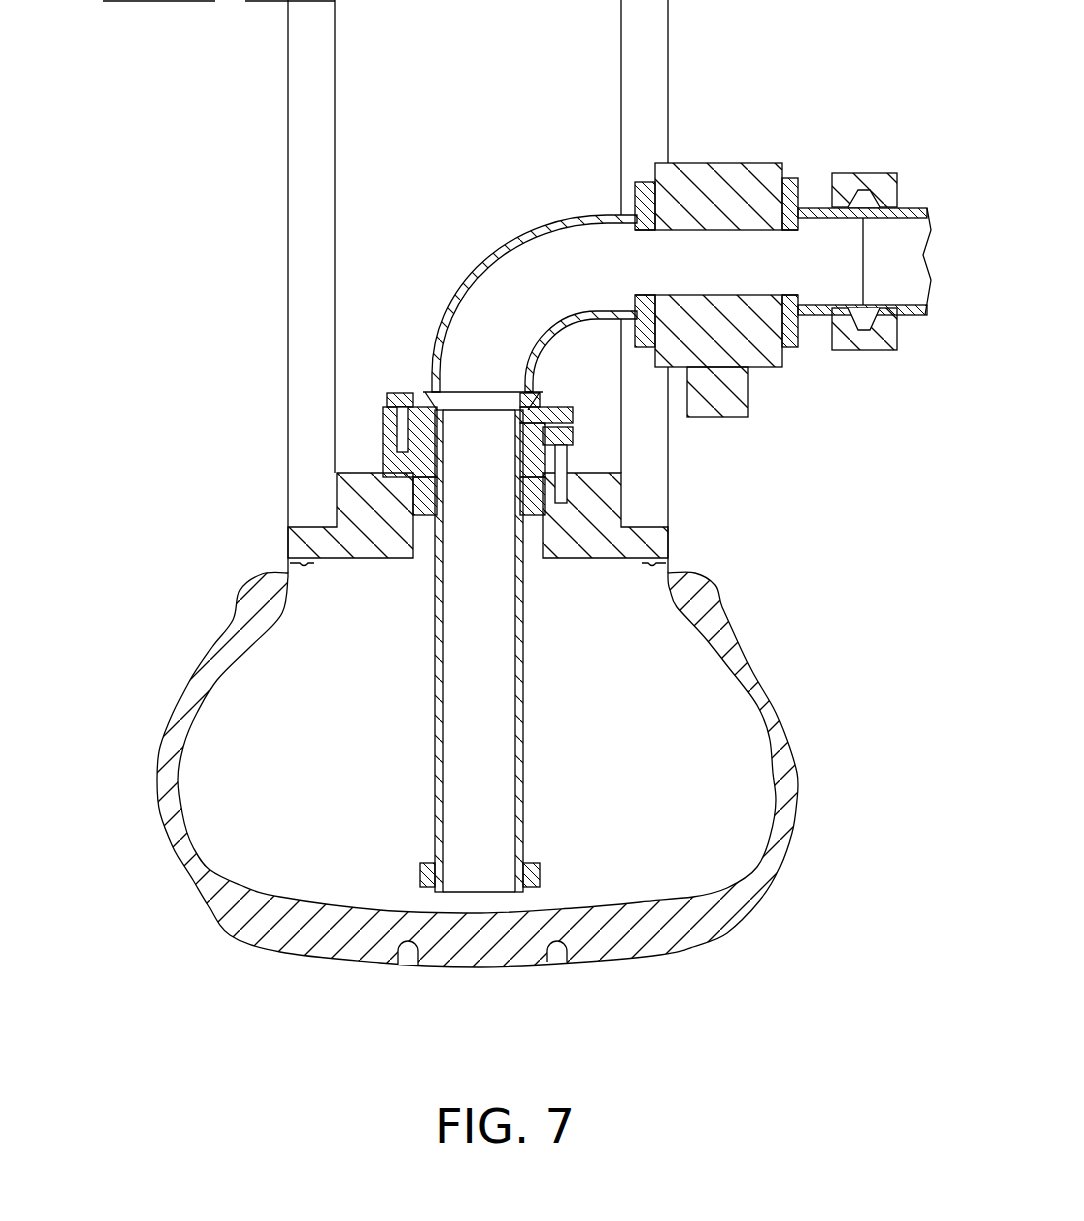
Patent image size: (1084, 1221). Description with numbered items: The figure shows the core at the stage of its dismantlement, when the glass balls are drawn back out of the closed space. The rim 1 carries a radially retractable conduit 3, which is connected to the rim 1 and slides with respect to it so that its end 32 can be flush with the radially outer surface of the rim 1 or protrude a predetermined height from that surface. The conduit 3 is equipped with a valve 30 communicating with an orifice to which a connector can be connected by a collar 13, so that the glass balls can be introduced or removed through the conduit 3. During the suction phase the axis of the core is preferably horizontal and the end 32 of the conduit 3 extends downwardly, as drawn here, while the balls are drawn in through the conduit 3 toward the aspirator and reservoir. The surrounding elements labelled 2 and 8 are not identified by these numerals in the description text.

The rim 1 is at (347, 503).
The vessel 2 is at (200, 843).
The radially retractable conduit 3 is at (432, 673).
The vessel bottom 8 is at (303, 947).
The collar 13 is at (877, 178).
The valve 30 is at (738, 398).
The end of the conduit 32 is at (540, 880).